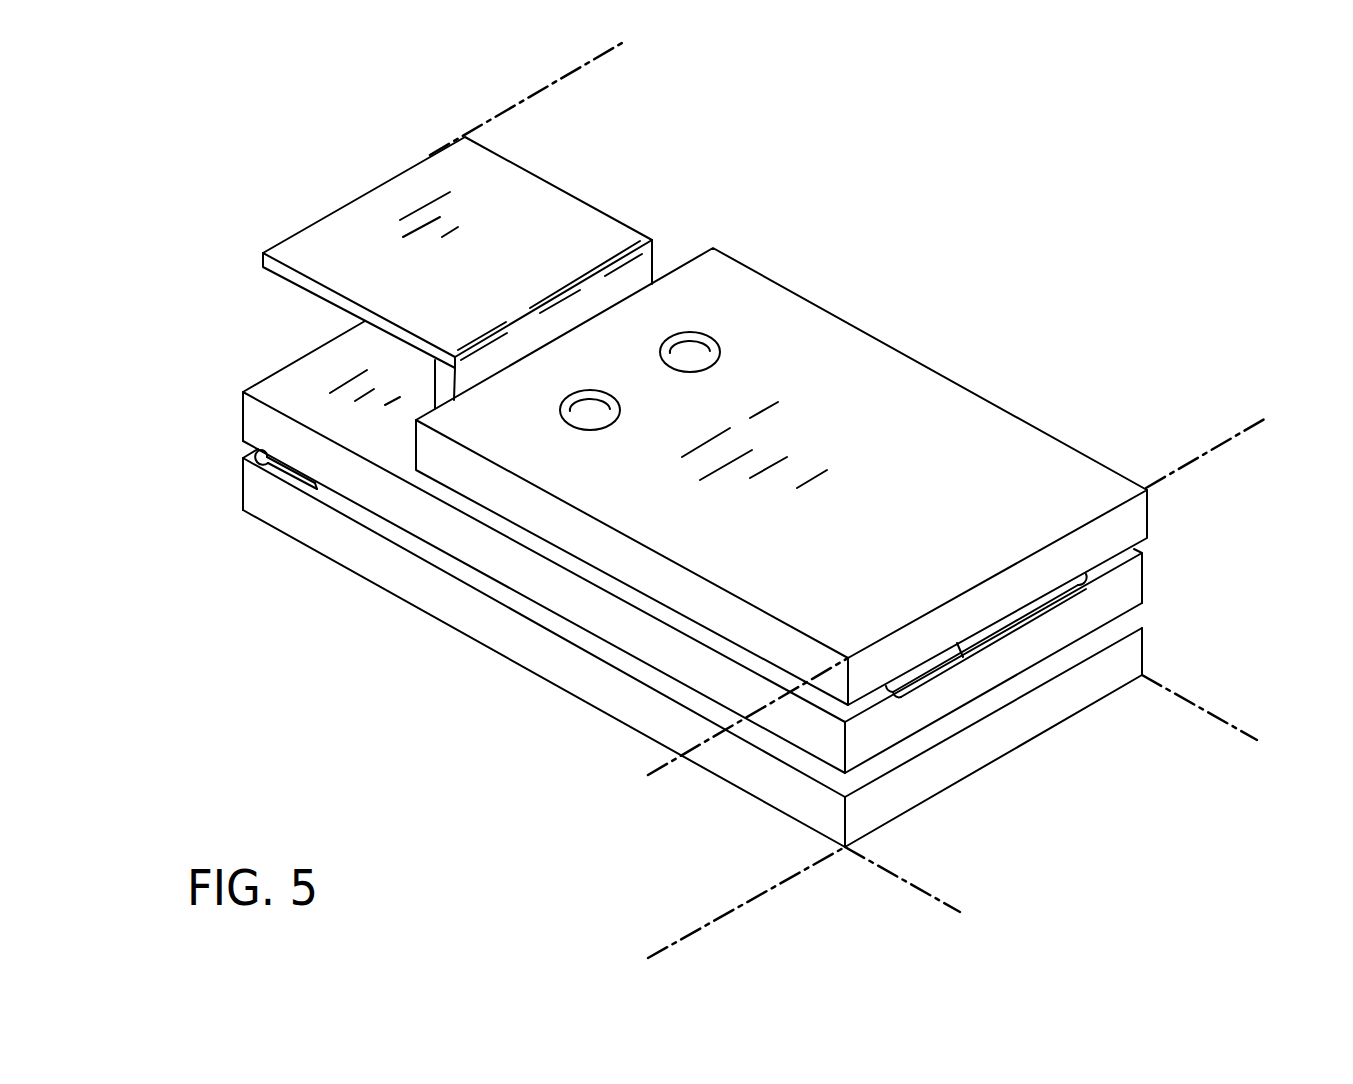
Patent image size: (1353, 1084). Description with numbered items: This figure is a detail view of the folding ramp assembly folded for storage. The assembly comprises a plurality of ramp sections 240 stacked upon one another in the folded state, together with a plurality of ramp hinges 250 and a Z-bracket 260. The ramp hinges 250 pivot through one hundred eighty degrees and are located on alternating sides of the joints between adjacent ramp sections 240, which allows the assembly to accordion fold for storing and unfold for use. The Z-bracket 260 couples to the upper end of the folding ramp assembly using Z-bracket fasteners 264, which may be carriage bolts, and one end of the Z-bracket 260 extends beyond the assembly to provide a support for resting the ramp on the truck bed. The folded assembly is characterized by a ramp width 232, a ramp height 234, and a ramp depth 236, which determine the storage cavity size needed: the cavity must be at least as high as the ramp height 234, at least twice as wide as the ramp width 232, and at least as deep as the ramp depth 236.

The ramp sections 240 is at (510, 498).
The ramp hinges 250 is at (287, 467).
The Z-bracket 260 is at (316, 248).
The Z-bracket fasteners 264 is at (590, 410).
The ramp width 232 is at (1176, 718).
The ramp height 234 is at (696, 770).
The ramp depth 236 is at (1186, 441).